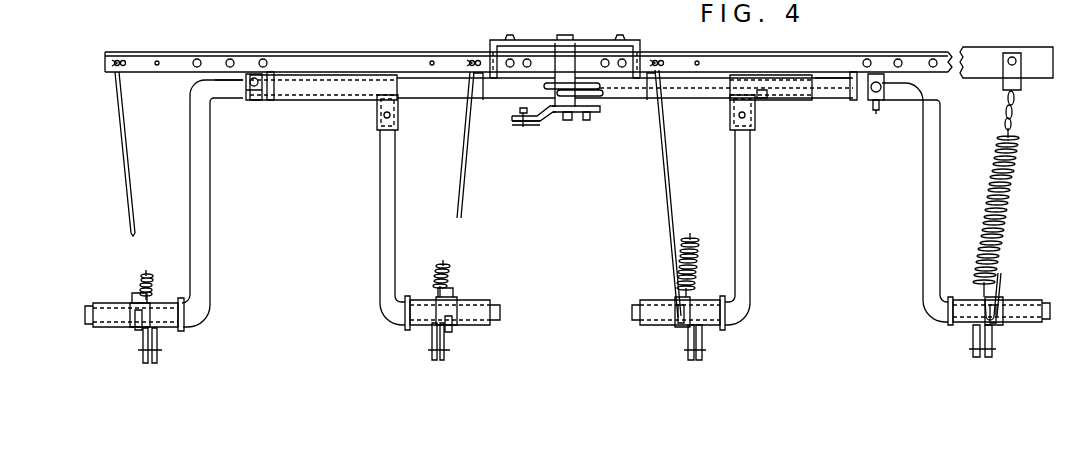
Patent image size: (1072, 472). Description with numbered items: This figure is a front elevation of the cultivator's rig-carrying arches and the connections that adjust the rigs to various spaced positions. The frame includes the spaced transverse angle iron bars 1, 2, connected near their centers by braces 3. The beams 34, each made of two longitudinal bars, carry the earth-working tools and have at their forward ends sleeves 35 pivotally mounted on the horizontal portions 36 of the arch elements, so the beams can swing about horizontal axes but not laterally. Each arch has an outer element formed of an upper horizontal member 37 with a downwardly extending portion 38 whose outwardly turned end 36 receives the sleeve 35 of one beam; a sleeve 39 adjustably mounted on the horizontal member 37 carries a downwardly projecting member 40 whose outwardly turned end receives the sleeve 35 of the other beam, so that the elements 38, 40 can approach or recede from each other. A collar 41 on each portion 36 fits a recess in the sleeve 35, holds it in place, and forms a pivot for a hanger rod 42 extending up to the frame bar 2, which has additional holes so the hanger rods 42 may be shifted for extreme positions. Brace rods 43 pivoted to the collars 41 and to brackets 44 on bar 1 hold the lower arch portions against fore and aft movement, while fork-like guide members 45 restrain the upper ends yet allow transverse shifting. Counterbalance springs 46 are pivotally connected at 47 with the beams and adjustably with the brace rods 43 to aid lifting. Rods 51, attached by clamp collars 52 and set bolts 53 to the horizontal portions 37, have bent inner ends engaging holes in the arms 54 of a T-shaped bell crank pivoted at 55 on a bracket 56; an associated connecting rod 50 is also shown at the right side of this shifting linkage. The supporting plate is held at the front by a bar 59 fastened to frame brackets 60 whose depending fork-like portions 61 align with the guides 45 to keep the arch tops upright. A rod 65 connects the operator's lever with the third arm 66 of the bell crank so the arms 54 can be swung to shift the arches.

The transverse angle iron bar 1 is at (985, 78).
The transverse angle iron bar 2 is at (307, 54).
The brace 3 is at (478, 50).
The beam 34 is at (835, 459).
The sleeve 35 is at (98, 328).
The horizontal portion of arch element 36 is at (186, 316).
The upper horizontal member 37 is at (225, 92).
The downwardly extending portion 38 is at (211, 256).
The sleeve 39 is at (342, 94).
The downwardly projecting member 40 is at (380, 226).
The collar 41 is at (133, 297).
The hanger rod 42 is at (1013, 263).
The brace rod 43 is at (1013, 115).
The bracket 44 is at (1021, 86).
The fork-like guide member 45 is at (282, 100).
The counterbalance spring 46 is at (150, 276).
The pivotal connection 47 is at (143, 352).
The right operating bar 50 is at (697, 94).
The rod 51 is at (442, 100).
The clamp collar 52 is at (252, 101).
The set bolt 53 is at (876, 111).
The arm of T-shaped lever 54 is at (601, 109).
The pivot 55 is at (568, 121).
The bracket 56 is at (573, 78).
The bar 59 is at (531, 42).
The frame bracket 60 is at (492, 46).
The fork-like portion 61 is at (472, 101).
The rod 65 is at (523, 128).
The third arm of bell crank lever 66 is at (542, 122).